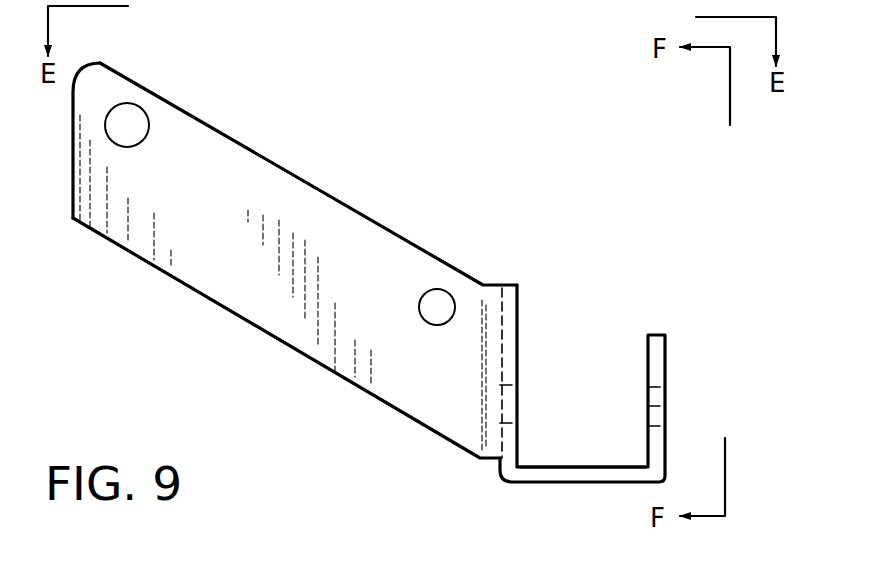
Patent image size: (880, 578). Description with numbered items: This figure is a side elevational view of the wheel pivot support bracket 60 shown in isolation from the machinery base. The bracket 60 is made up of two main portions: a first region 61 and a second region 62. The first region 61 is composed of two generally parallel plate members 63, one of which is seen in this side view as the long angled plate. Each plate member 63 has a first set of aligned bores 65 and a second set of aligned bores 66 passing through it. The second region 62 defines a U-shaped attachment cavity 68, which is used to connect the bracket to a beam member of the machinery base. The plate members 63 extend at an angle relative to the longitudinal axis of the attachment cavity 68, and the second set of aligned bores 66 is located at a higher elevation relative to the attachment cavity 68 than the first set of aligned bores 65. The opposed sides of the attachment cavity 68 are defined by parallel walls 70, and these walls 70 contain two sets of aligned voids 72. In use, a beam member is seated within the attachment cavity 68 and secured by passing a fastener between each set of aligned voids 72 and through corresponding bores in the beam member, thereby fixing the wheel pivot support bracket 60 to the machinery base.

The wheel pivot support bracket 60 is at (60, 293).
The first region 61 is at (232, 322).
The second region 62 is at (582, 485).
The plate member 63 is at (278, 183).
The first set of aligned bores 65 is at (452, 298).
The second set of aligned bores 66 is at (148, 128).
The attachment cavity 68 is at (598, 410).
The parallel wall 70 is at (507, 323).
The aligned voids 72 is at (501, 400).